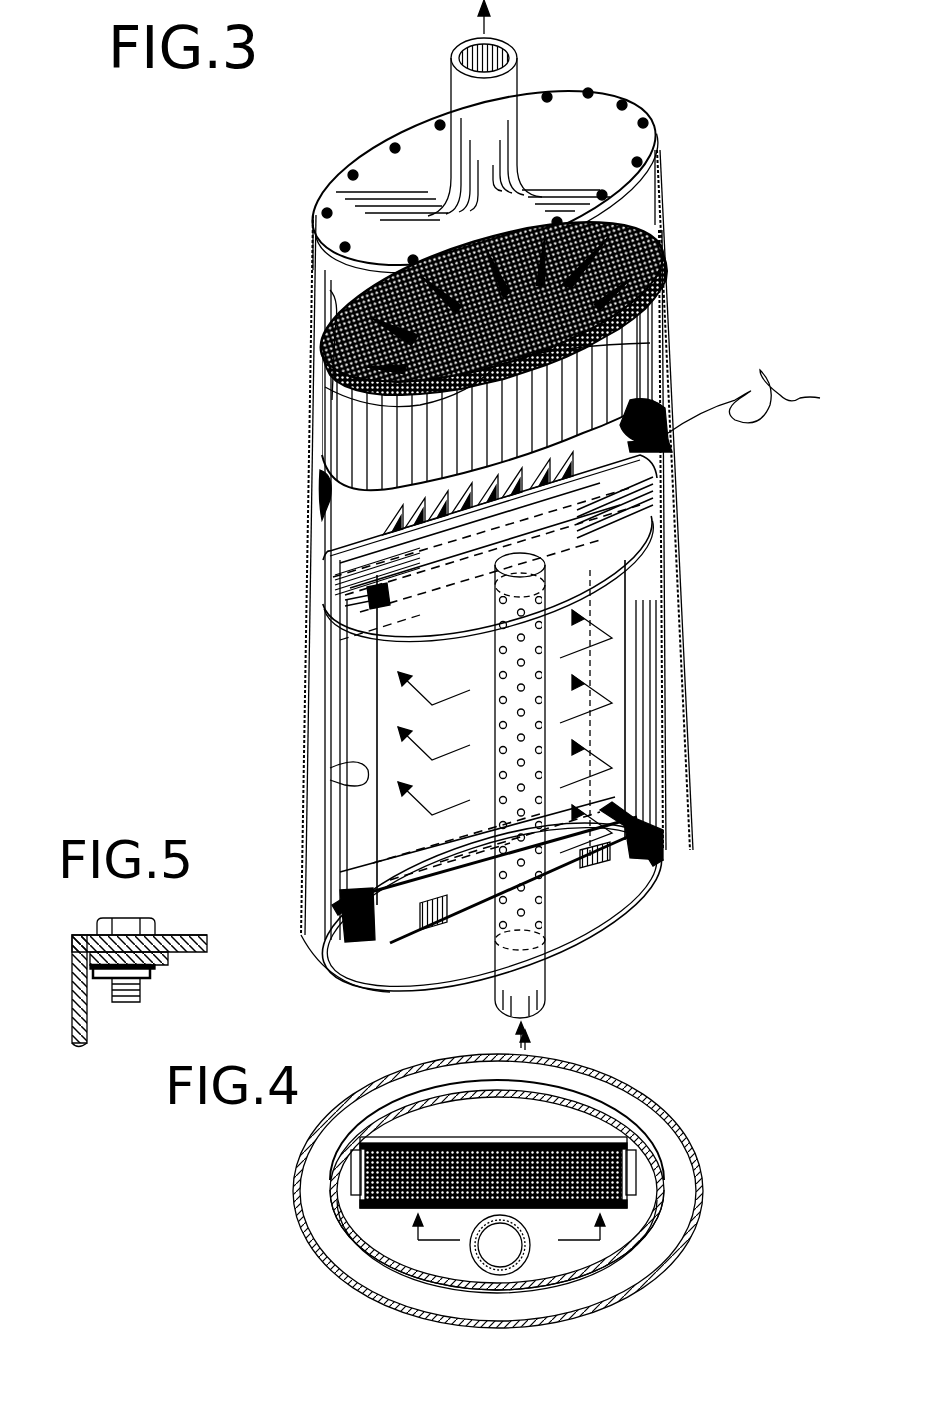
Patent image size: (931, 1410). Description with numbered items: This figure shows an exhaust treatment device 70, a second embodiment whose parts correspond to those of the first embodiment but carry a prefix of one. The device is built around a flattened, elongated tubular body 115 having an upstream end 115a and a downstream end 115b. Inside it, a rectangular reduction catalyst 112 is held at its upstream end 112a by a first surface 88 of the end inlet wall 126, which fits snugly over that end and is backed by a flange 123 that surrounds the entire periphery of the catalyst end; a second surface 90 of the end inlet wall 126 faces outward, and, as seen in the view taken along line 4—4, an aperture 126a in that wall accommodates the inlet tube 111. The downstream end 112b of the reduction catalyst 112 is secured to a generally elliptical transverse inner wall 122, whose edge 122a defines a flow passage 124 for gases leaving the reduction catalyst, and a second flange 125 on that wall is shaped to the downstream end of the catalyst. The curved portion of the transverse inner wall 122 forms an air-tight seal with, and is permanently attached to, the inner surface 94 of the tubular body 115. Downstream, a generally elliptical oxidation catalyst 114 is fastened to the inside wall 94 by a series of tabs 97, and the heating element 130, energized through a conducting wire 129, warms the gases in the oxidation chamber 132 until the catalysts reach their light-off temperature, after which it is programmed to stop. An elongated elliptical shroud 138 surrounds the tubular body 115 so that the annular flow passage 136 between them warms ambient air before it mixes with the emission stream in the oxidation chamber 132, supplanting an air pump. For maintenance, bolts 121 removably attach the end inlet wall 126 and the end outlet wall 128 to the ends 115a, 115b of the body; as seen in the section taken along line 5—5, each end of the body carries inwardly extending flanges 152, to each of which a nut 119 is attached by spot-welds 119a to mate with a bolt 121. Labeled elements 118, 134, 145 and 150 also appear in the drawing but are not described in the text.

In FIG. 3, the device 70 is at (727, 558).
In FIG. 3, the first surface of the end inlet wall 88 is at (422, 972).
In FIG. 3, the second surface of the end inlet wall 90 is at (375, 1000).
In FIG. 3, the inner surface of the elongated tubular body 94 is at (330, 768).
In FIG. 3, the tabs 97 is at (325, 420).
In FIG. 3, the inlet tube 111 is at (540, 1002).
In FIG. 3, the reduction catalyst 112 is at (615, 655).
In FIG. 4, the reduction catalyst 112 is at (650, 1230).
In FIG. 3, the upstream end of the reduction catalyst 112a is at (608, 892).
In FIG. 3, the downstream end of the reduction catalyst 112b is at (665, 475).
In FIG. 3, the oxidation catalyst 114 is at (610, 348).
In FIG. 3, the elongated tubular body 115 is at (660, 690).
In FIG. 5, the elongated tubular body 115 is at (72, 1043).
In FIG. 4, the elongated tubular body 115 is at (665, 1193).
In FIG. 3, the upstream end of the elongated tubular body 115a is at (660, 830).
In FIG. 3, the downstream end of the elongated tubular body 115b is at (655, 160).
In FIG. 3, the perforated inlet tube 118 is at (645, 835).
In FIG. 4, the perforated inlet tube 118 is at (522, 1268).
In FIG. 5, the nut 119 is at (140, 990).
In FIG. 5, the spot-welds 119a is at (146, 974).
In FIG. 3, the bolts 121 is at (592, 92).
In FIG. 5, the bolts 121 is at (136, 917).
In FIG. 3, the transverse inner wall 122 is at (345, 600).
In FIG. 3, the edge of the transverse inner wall 122a is at (350, 560).
In FIG. 3, the flange 123 is at (475, 935).
In FIG. 4, the flange 123 is at (610, 1215).
In FIG. 3, the flow passage 124 is at (338, 548).
In FIG. 4, the flow passage 124 is at (440, 1125).
In FIG. 3, the second flange 125 is at (360, 648).
In FIG. 3, the end inlet wall 126 is at (635, 930).
In FIG. 5, the end inlet wall 126 is at (172, 934).
In FIG. 4, the end inlet wall 126 is at (392, 1242).
In FIG. 3, the aperture 126a is at (575, 945).
In FIG. 4, the aperture 126a is at (495, 1248).
In FIG. 3, the end outlet wall 128 is at (345, 168).
In FIG. 3, the conducting wire 129 is at (773, 402).
In FIG. 3, the heating element 130 is at (670, 445).
In FIG. 3, the oxidation chamber 132 is at (330, 520).
In FIG. 3, the gasket 134 is at (650, 420).
In FIG. 3, the annular flow passage 136 is at (330, 798).
In FIG. 4, the annular flow passage 136 is at (658, 1138).
In FIG. 3, the shroud 138 is at (692, 770).
In FIG. 4, the shroud 138 is at (650, 1110).
In FIG. 3, the mesh screen 145 is at (640, 215).
In FIG. 3, the outlet pipe 150 is at (498, 92).
In FIG. 3, the inwardly extending flanges 152 is at (655, 860).
In FIG. 5, the inwardly extending flanges 152 is at (170, 960).
In FIG. 3, the section line 4— 4 is at (758, 748).
In FIG. 3, the section line 5— 5 is at (378, 118).